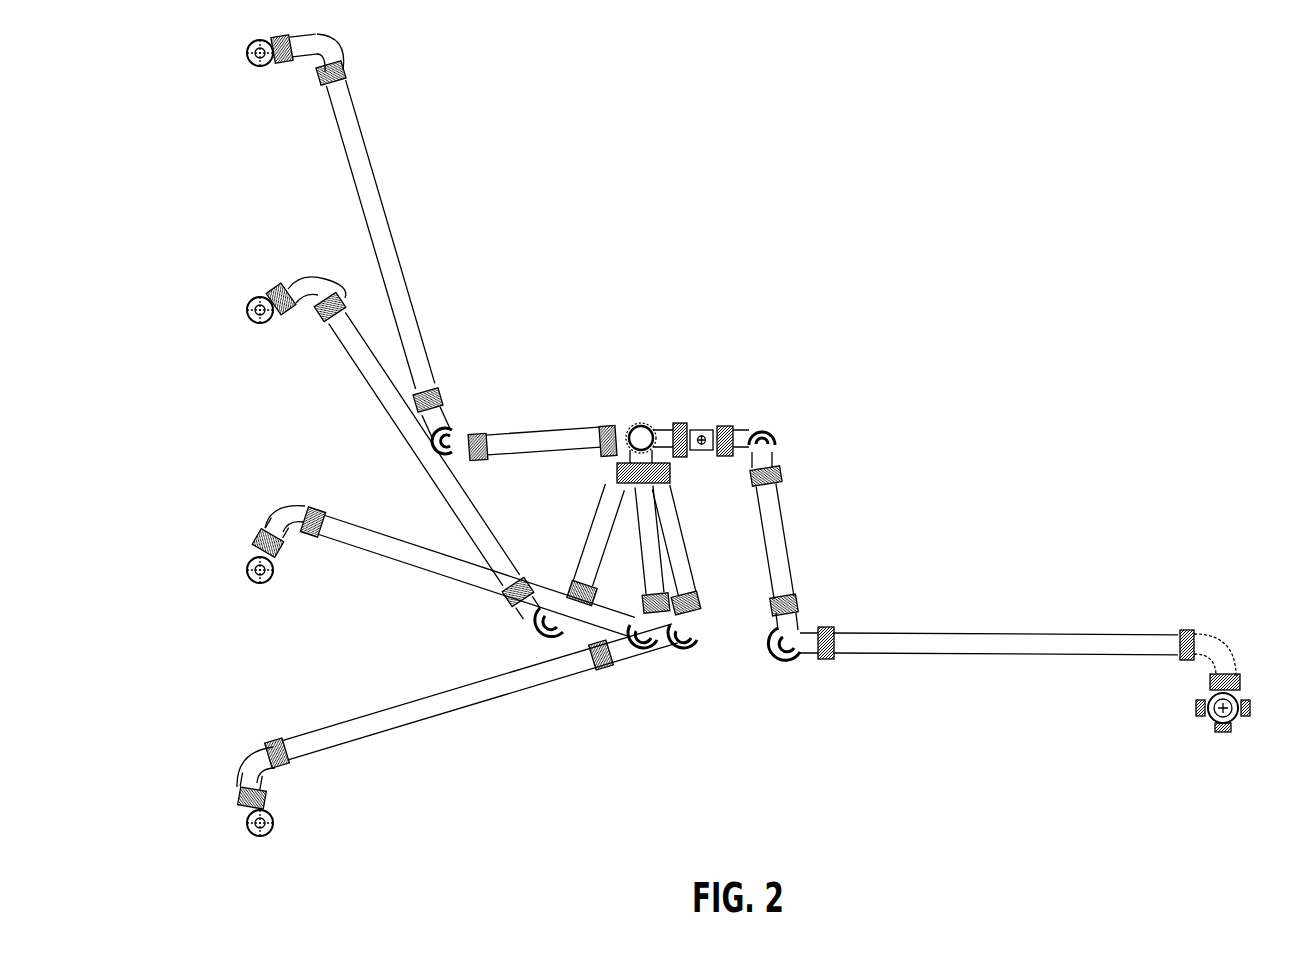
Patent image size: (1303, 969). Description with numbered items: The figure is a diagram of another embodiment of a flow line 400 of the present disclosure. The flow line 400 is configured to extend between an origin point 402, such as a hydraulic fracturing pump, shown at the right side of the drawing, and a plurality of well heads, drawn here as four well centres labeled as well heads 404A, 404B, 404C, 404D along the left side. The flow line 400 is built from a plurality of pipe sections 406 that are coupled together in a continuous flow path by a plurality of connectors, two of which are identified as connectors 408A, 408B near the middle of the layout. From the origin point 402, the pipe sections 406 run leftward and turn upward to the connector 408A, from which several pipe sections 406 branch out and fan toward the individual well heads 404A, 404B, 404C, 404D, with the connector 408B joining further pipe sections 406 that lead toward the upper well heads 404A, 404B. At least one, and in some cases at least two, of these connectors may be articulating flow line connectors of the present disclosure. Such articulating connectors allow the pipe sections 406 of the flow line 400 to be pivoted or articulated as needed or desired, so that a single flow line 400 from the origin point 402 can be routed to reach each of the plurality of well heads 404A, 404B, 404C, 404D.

The flow line 400 is at (898, 159).
The origin point 402 is at (1240, 692).
The well head 404A is at (246, 54).
The well head 404B is at (246, 310).
The well head 404C is at (246, 570).
The well head 404D is at (246, 823).
The pipe section 406 is at (375, 206).
The connector 408A is at (652, 428).
The connector 408B is at (446, 426).